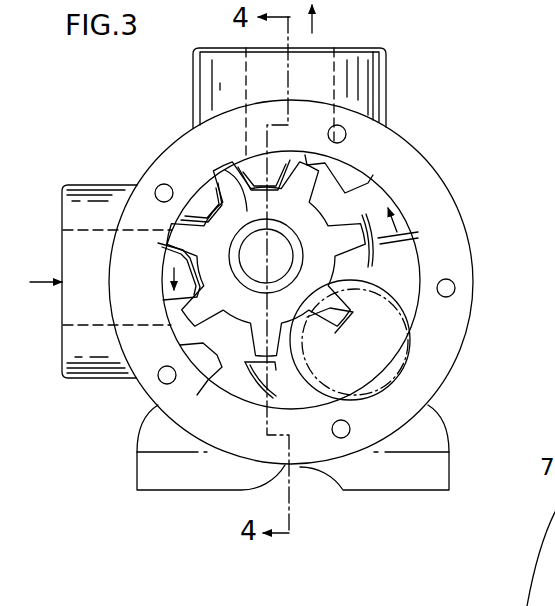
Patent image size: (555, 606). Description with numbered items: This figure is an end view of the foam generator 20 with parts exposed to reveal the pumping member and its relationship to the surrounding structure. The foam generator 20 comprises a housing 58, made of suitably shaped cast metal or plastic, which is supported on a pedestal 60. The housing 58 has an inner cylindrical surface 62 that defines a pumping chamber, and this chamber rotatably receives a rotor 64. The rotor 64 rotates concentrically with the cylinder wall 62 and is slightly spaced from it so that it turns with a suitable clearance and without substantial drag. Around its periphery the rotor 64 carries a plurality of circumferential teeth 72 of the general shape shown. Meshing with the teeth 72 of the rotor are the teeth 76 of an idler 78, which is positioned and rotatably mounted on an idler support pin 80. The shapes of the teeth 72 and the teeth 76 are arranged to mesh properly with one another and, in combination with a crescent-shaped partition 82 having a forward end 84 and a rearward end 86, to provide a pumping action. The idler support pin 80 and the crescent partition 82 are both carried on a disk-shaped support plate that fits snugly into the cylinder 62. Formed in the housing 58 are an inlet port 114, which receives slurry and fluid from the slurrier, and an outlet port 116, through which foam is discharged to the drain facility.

The foam generator 20 is at (178, 135).
The housing 58 is at (463, 293).
The pedestal 60 is at (417, 430).
The inner cylindrical surface 62 is at (402, 253).
The rotor 64 is at (367, 200).
The circumferential teeth 72 is at (340, 173).
The teeth of idler 76 is at (303, 160).
The idler 78 is at (217, 170).
The idler support pin 80 is at (250, 262).
The crescent-shaped partition 82 is at (403, 330).
The forward end 84 is at (233, 393).
The rearward end 86 is at (407, 233).
The inlet port 114 is at (101, 195).
The outlet port 116 is at (336, 58).